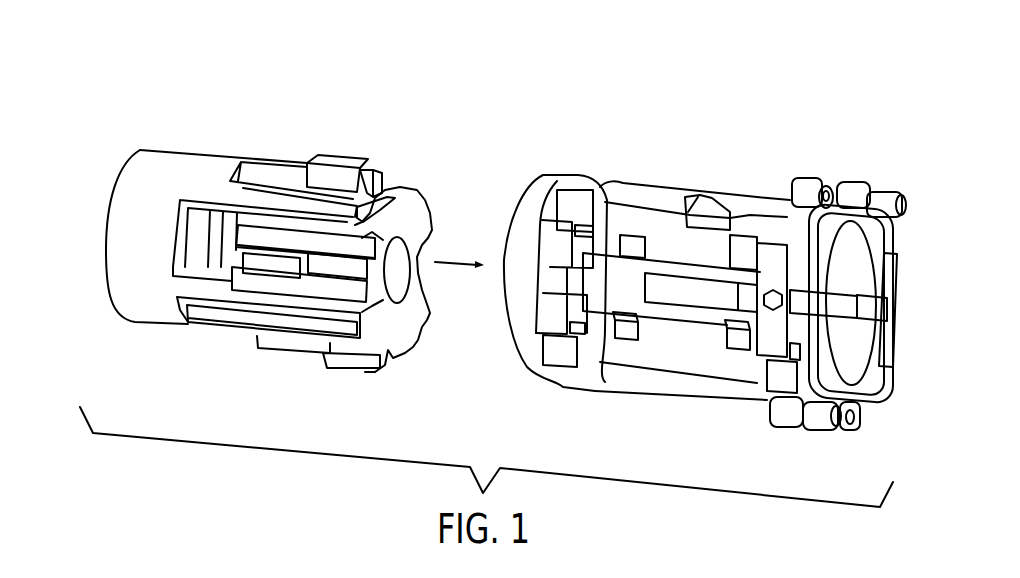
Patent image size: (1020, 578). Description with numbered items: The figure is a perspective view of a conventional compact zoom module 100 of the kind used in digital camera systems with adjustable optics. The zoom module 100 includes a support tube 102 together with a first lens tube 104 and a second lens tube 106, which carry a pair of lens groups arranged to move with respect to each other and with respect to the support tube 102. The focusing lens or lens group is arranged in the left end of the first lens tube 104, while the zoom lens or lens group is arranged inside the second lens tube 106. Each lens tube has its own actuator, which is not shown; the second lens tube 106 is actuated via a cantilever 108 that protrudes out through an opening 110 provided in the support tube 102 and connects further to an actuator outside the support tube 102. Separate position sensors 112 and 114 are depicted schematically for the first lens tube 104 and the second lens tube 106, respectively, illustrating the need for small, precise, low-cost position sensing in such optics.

The zoom module 100 is at (533, 92).
The support tube 102 is at (626, 180).
The first lens tube 104 is at (152, 163).
The second lens tube 106 is at (413, 218).
The cantilever 108 is at (305, 268).
The opening 110 is at (690, 298).
The position sensor 112 is at (322, 378).
The position sensor 114 is at (348, 138).